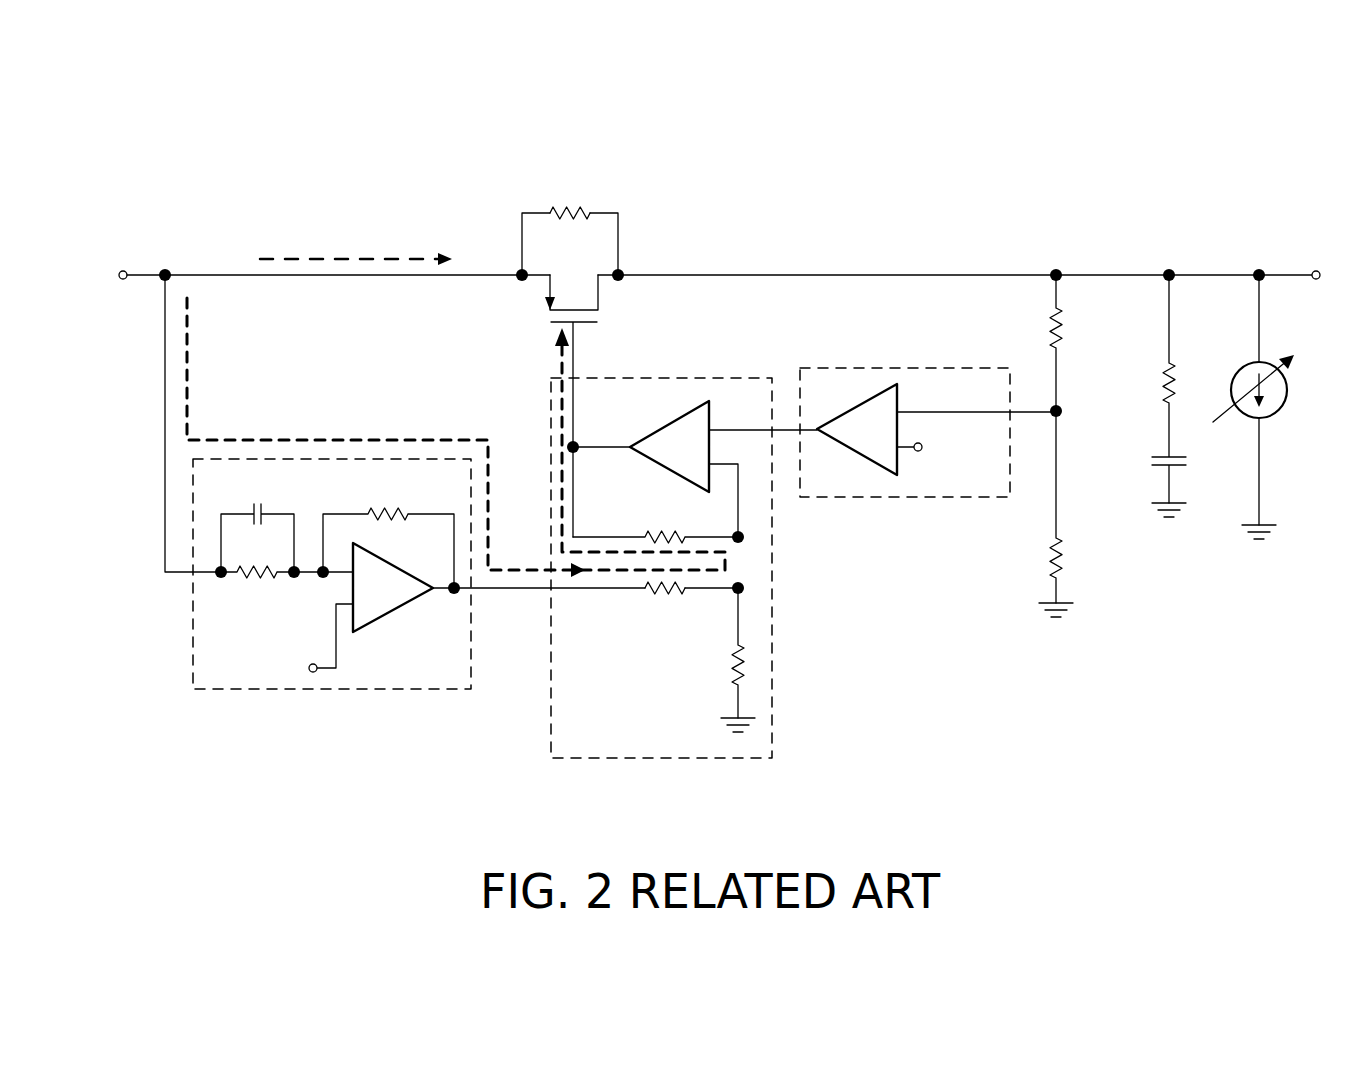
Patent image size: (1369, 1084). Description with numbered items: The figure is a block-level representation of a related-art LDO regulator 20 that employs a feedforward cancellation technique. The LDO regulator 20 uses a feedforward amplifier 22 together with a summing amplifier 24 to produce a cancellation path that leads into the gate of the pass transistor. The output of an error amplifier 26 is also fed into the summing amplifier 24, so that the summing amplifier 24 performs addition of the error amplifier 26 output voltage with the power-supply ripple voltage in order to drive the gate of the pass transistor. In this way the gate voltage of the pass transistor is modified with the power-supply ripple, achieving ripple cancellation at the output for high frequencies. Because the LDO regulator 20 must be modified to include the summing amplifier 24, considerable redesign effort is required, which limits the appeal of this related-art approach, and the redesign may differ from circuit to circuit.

The LDO regulator 20 is at (158, 158).
The feedforward amplifier 22 is at (193, 668).
The summing amplifier 24 is at (772, 620).
The error amplifier 26 is at (921, 368).